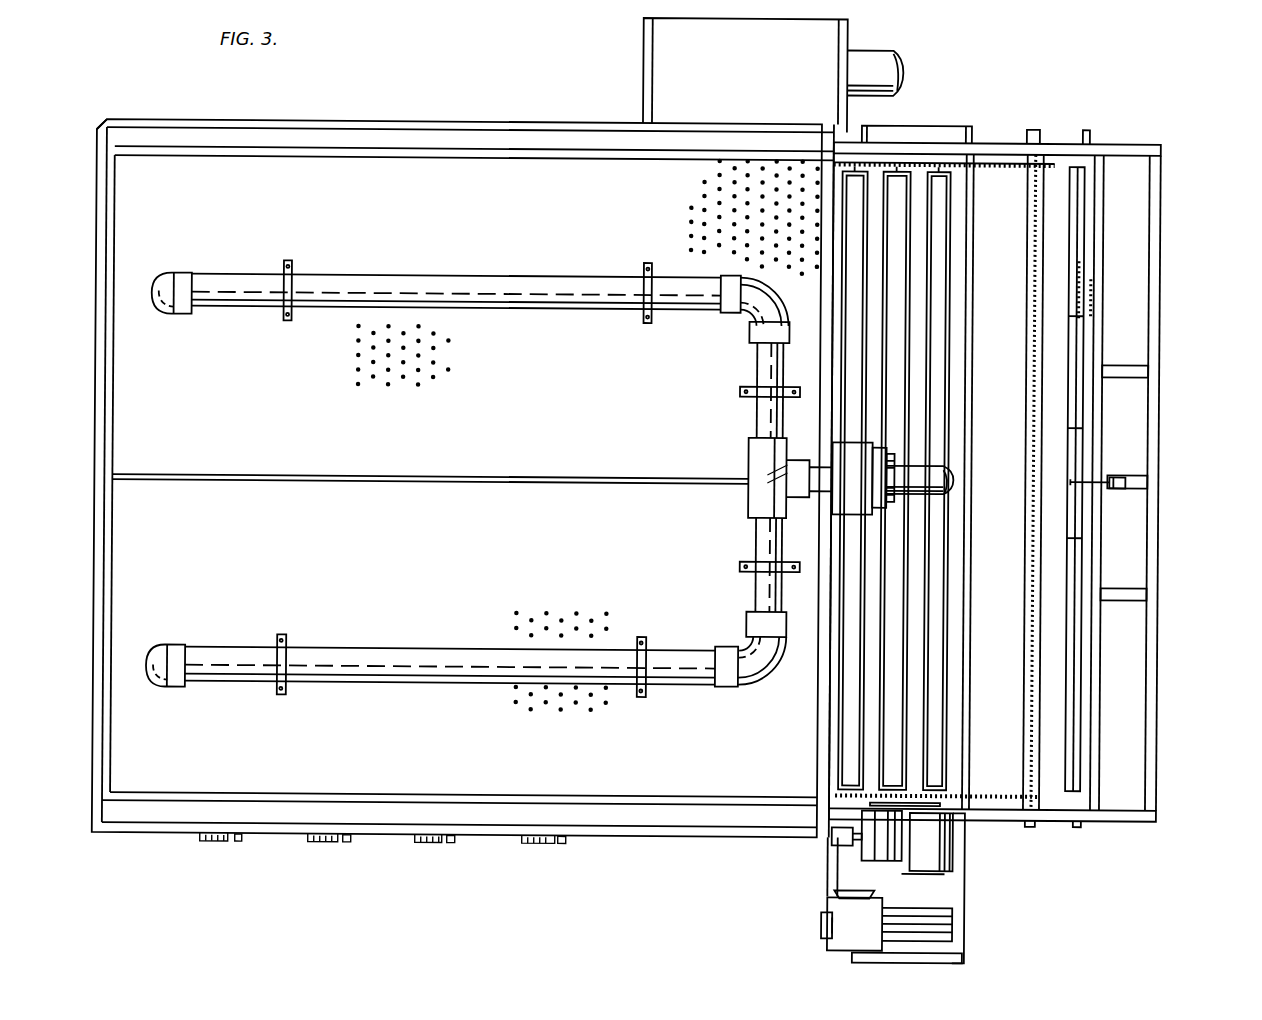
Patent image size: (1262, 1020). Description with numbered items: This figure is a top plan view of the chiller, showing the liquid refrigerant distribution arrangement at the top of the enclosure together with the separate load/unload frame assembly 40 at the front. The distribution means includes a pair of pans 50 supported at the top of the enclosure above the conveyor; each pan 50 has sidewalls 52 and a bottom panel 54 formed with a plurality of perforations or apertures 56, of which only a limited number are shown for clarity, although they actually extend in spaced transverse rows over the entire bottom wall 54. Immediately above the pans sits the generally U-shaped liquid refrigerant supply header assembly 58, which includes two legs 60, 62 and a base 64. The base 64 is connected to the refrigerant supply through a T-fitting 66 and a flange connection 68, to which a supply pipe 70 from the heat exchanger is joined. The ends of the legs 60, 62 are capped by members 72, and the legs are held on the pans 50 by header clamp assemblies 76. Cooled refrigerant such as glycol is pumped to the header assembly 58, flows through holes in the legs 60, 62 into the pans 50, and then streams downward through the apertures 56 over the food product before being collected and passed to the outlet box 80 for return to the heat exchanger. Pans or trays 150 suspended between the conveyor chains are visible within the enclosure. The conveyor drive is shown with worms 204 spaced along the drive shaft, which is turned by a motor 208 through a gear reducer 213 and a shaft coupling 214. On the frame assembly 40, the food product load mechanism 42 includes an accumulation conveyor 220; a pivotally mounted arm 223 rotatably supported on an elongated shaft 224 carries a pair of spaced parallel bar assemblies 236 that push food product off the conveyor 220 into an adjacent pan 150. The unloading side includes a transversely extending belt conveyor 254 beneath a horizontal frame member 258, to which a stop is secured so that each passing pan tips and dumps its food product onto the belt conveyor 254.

The frame assembly 40 is at (1150, 114).
The food product load mechanism 42 is at (1114, 425).
The pan 50 is at (258, 186).
The sidewall 52 is at (503, 148).
The bottom panel 54 is at (254, 375).
The apertures 56 is at (730, 202).
The liquid refrigerant supply header assembly 58 is at (583, 272).
The leg 60 is at (492, 272).
The leg 62 is at (484, 646).
The base 64 is at (760, 413).
The T-fitting 66 is at (760, 452).
The flange connection 68 is at (886, 442).
The supply pipe 70 is at (930, 462).
The cap member 72 is at (165, 285).
The header clamp assembly 76 is at (293, 280).
The outlet box 80 is at (642, 62).
The tray 150 is at (897, 201).
The worm 204 is at (322, 840).
The motor 208 is at (930, 843).
The gear reducer 213 is at (877, 852).
The shaft coupling 214 is at (838, 836).
The conveyor 220 is at (1078, 803).
The arm 223 is at (1118, 472).
The elongated shaft 224 is at (1104, 628).
The bar assembly 236 is at (1072, 566).
The belt conveyor 254 is at (935, 900).
The horizontal frame member 258 is at (905, 136).